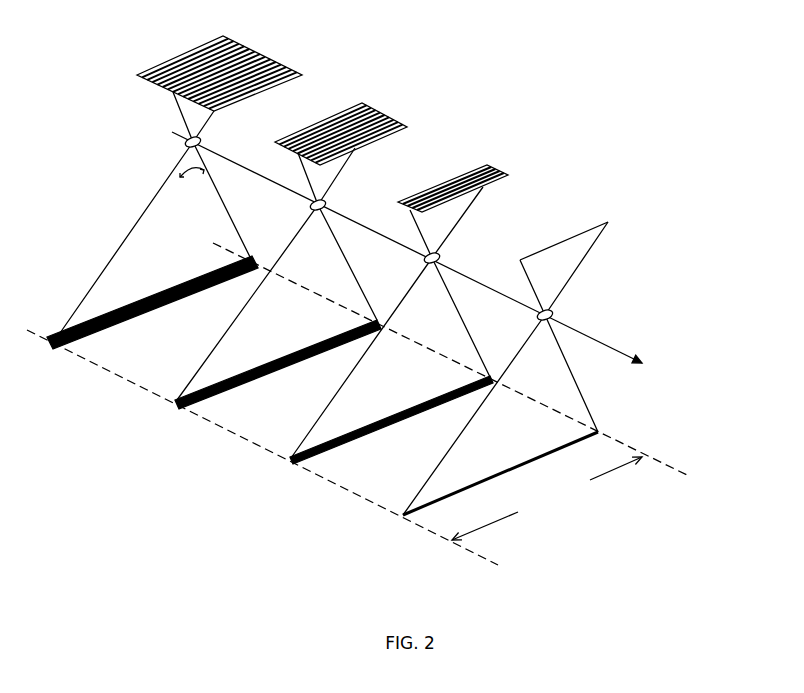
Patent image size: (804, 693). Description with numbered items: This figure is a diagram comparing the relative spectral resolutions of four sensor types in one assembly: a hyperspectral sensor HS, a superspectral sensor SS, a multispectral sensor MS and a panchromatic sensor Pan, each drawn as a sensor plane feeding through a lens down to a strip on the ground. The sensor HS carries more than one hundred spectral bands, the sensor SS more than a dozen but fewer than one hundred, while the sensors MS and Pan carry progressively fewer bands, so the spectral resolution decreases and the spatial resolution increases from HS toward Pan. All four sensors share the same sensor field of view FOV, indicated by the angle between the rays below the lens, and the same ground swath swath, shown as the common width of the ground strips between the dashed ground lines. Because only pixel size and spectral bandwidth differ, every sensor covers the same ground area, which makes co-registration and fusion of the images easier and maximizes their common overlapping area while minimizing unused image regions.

The hyperspectral sensor HS is at (178, 192).
The superspectral sensor SS is at (295, 247).
The multispectral sensor MS is at (407, 301).
The panchromatic sensor Pan is at (519, 351).
The sensor field of view FOV is at (192, 184).
The ground swath is at (547, 498).